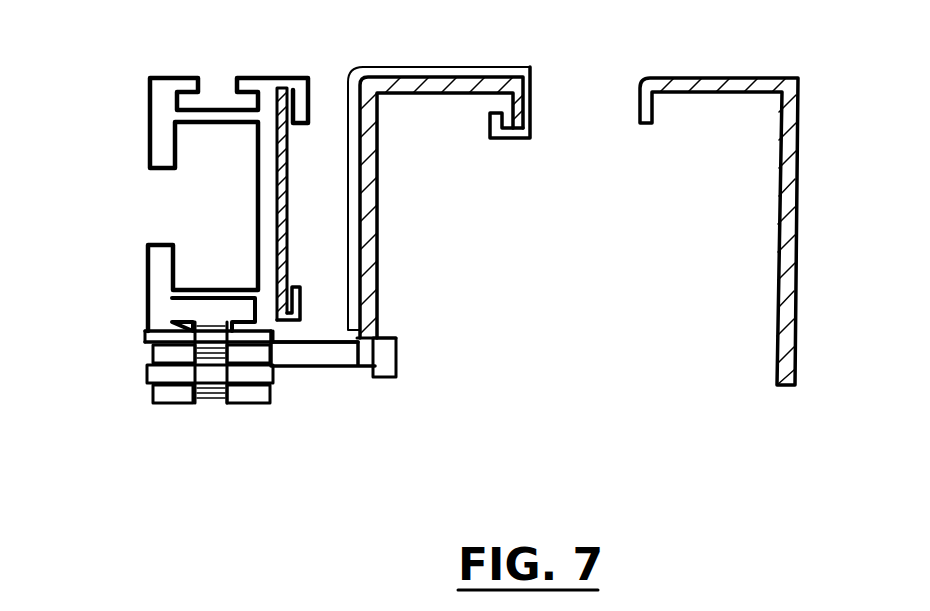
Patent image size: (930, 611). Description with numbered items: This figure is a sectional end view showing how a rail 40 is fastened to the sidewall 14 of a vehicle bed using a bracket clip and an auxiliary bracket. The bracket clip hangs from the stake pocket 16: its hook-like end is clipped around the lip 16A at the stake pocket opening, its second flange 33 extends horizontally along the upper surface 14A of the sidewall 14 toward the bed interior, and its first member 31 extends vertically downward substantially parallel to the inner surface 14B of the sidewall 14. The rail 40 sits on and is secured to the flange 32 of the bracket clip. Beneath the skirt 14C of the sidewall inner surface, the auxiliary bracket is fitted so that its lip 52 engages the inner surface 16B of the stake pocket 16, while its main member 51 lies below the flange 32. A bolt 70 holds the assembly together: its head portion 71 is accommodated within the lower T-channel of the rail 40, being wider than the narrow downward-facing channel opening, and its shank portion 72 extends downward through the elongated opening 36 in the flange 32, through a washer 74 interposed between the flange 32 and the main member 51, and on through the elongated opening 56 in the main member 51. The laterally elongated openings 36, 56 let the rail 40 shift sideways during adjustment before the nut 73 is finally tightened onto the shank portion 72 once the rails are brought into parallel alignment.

The sidewall 14 is at (828, 223).
The upper surface 14A is at (712, 78).
The inner surface 14B is at (350, 178).
The skirt 14C is at (368, 368).
The stake pocket 16 is at (578, 64).
The lip 16A is at (635, 106).
The inner surface 16B is at (381, 157).
The first member 31 is at (346, 220).
The flange 32 is at (315, 322).
The second flange 33 is at (439, 66).
The elongated opening 36 is at (278, 338).
The rail 40 is at (113, 318).
The main member 51 is at (331, 370).
The lip 52 is at (398, 358).
The elongated opening 56 is at (258, 404).
The bolt 70 is at (215, 432).
The head portion 71 is at (214, 312).
The shank portion 72 is at (238, 404).
The nut 73 is at (177, 403).
The washer 74 is at (174, 352).